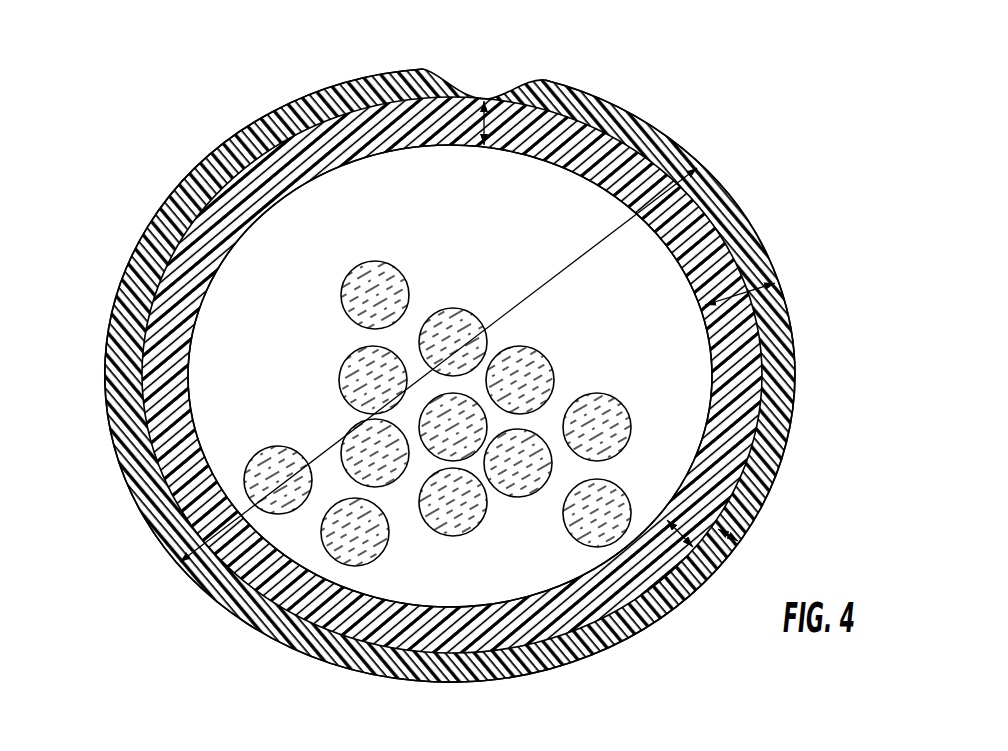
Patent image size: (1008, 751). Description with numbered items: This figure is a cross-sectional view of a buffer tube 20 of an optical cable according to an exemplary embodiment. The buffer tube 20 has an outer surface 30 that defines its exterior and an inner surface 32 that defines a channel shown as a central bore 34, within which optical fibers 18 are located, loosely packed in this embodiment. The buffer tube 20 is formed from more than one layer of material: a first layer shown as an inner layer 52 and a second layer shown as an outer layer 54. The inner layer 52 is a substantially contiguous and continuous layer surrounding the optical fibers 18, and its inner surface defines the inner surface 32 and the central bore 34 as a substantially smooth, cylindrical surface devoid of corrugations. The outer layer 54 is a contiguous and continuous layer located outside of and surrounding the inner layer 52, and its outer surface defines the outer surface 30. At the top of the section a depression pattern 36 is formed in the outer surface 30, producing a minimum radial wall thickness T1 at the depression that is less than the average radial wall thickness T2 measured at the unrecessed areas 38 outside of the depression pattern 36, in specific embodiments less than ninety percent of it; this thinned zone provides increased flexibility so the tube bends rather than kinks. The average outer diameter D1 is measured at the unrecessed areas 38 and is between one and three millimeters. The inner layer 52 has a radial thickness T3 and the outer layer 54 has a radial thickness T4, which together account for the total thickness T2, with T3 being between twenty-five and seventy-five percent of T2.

The optical fibers 18 is at (518, 492).
The buffer tube 20 is at (809, 169).
The outer surface 30 is at (800, 383).
The inner surface 32 is at (318, 180).
The central bore 34 is at (378, 188).
The depression pattern 36 is at (491, 66).
The areas outside of depression pattern 38 is at (792, 290).
The inner layer 52 is at (572, 607).
The outer layer 54 is at (640, 631).
The average outer diameter D1 is at (327, 446).
The minimum radial wall thickness T1 is at (484, 128).
The average radial wall thickness T2 is at (741, 292).
The inner layer thickness T3 is at (680, 537).
The outer layer thickness T4 is at (737, 537).